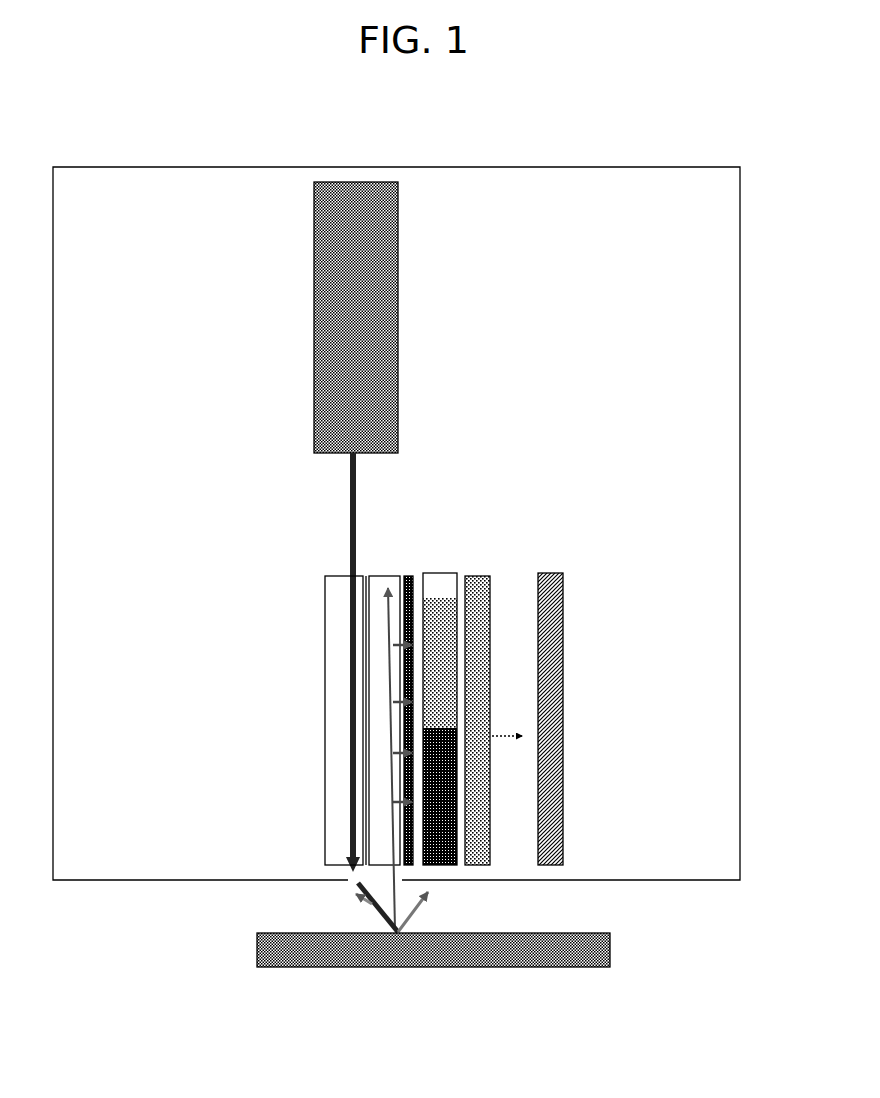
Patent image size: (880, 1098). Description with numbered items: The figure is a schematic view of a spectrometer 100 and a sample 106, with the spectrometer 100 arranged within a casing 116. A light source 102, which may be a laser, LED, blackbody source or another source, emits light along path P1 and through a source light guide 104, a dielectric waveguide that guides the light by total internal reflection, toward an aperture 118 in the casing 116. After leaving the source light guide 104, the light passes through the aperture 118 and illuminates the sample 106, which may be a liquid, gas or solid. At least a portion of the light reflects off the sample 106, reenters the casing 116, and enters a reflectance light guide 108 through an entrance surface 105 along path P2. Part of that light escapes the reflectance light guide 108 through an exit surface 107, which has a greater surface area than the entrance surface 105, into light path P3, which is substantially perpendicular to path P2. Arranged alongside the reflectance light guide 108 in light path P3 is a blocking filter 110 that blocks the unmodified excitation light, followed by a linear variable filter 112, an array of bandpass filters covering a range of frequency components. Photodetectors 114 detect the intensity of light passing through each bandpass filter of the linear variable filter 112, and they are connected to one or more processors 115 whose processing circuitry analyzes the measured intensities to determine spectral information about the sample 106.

The spectrometer 100 is at (291, 146).
The light source 102 is at (314, 264).
The source light guide 104 is at (328, 718).
The entrance surface 105 is at (378, 864).
The sample 106 is at (435, 968).
The exit surface 107 is at (398, 575).
The reflectance light guide 108 is at (392, 576).
The blocking filter 110 is at (408, 577).
The linear variable filter 112 is at (433, 572).
The photodetectors 114 is at (487, 572).
The processors 115 is at (547, 572).
The casing 116 is at (547, 165).
The aperture 118 is at (352, 882).
The path P1 is at (350, 635).
The path P2 is at (397, 870).
The light path P3 is at (460, 645).